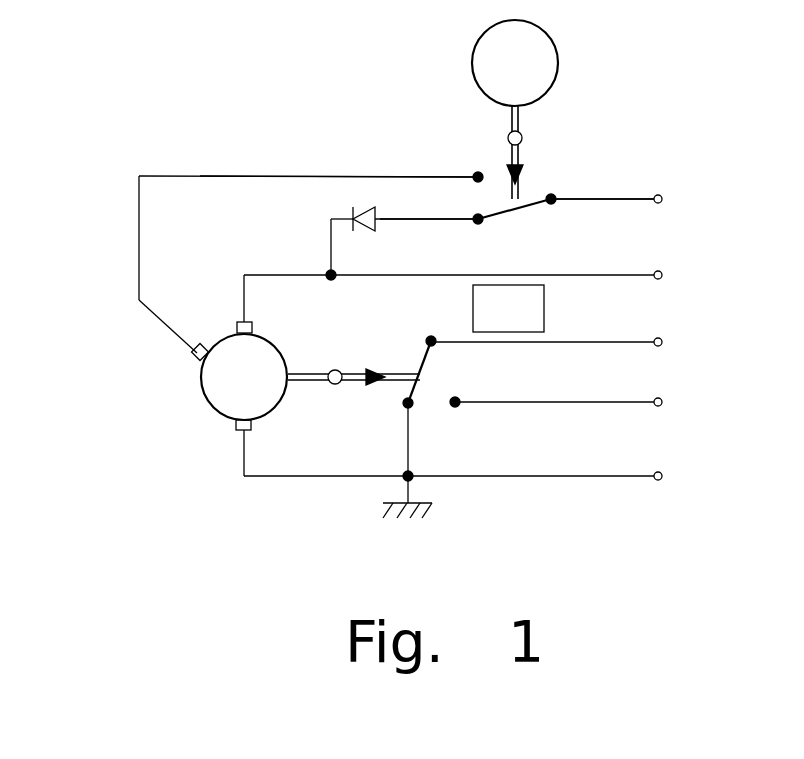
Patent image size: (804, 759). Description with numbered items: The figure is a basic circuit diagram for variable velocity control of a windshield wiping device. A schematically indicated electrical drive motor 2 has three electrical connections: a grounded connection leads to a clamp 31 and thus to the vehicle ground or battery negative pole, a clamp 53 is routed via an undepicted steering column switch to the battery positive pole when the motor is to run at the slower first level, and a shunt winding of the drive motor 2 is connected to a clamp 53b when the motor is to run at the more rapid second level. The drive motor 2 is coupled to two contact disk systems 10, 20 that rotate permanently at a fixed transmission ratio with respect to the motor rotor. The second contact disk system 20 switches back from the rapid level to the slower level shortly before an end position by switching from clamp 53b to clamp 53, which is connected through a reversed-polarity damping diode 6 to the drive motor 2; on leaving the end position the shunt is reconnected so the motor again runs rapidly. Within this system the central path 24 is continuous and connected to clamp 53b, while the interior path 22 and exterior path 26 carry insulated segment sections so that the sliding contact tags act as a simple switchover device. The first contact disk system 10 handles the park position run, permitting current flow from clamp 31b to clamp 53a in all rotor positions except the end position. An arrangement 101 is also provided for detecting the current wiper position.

The drive motor 2 is at (545, 47).
The reversed-polarity damping diode 6 is at (363, 210).
The first contact disk system 10 is at (437, 427).
The second contact disk system 20 is at (546, 178).
The interior path 22 is at (387, 177).
The central path 24 is at (600, 200).
The exterior path 26 is at (418, 221).
The clamp 31 is at (213, 493).
The clamp 31b is at (573, 343).
The clamp 53 is at (212, 258).
The clamp 53a is at (585, 403).
The clamp 53b is at (100, 218).
The arrangement for detecting the current wiper position 101 is at (544, 305).